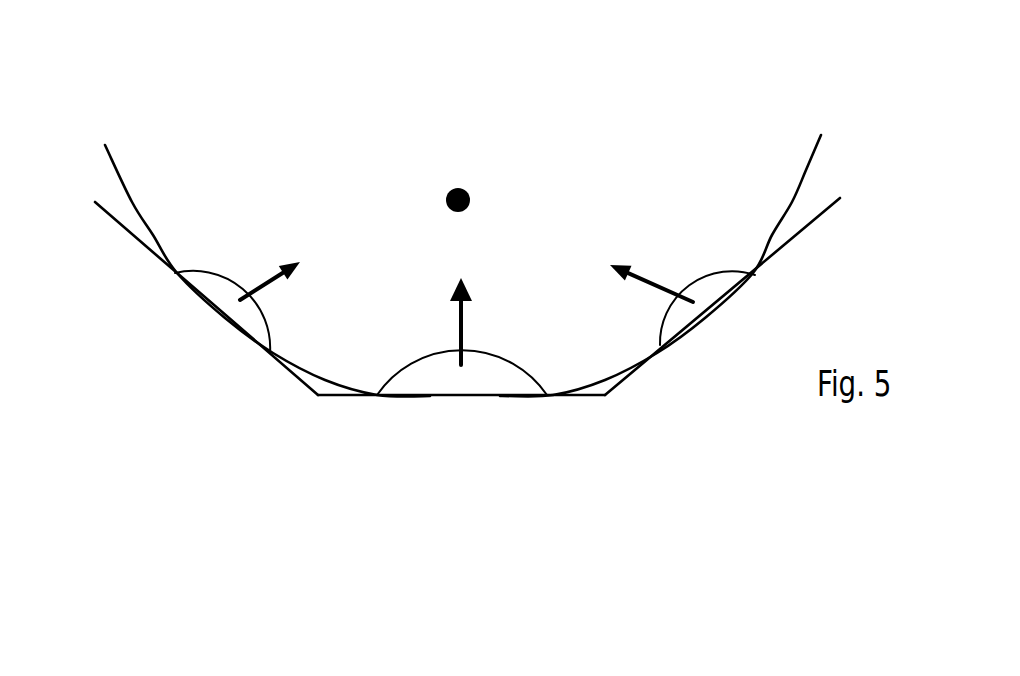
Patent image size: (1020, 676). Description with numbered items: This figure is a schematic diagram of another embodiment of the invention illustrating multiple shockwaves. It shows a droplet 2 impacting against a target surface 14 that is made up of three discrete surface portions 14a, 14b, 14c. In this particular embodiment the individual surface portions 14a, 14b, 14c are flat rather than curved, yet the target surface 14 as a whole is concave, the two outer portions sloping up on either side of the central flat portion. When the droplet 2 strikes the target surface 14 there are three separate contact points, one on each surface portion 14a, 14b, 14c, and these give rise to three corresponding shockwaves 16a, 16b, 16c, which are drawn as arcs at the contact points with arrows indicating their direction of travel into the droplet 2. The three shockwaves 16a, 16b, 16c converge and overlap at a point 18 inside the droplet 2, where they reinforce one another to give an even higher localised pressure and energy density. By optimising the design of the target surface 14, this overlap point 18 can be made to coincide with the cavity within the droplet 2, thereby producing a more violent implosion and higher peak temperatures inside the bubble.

The droplet 2 is at (695, 107).
The target surface 14 is at (337, 618).
The surface portion 14a is at (145, 258).
The surface portion 14b is at (580, 397).
The surface portion 14c is at (772, 264).
The shockwave 16a is at (213, 283).
The shockwave 16b is at (483, 370).
The shockwave 16c is at (703, 277).
The point 18 is at (488, 52).